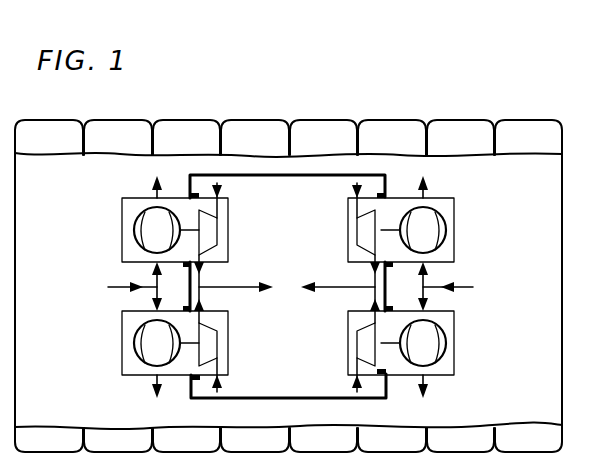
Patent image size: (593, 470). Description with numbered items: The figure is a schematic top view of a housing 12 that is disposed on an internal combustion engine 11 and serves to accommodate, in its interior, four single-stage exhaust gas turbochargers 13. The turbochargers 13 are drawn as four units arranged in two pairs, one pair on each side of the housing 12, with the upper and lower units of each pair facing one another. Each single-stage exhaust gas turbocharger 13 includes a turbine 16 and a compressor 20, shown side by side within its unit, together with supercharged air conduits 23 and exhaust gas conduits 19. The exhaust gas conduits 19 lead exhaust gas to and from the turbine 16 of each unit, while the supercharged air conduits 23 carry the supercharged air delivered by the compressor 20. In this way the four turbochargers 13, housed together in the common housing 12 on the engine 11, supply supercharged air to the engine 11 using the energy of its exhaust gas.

The engine 11 is at (63, 188).
The housing 12 is at (309, 175).
The single-stage exhaust gas turbocharger 13 is at (122, 255).
The turbine 16 is at (358, 231).
The exhaust gas conduits 19 is at (340, 283).
The compressor 20 is at (146, 235).
The supercharged air conduits 23 is at (154, 395).